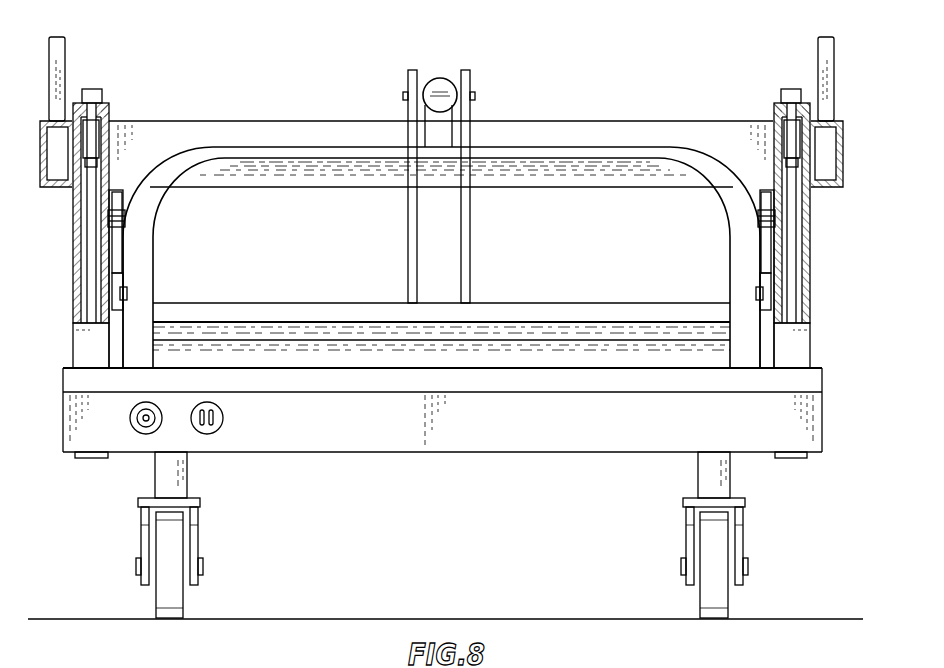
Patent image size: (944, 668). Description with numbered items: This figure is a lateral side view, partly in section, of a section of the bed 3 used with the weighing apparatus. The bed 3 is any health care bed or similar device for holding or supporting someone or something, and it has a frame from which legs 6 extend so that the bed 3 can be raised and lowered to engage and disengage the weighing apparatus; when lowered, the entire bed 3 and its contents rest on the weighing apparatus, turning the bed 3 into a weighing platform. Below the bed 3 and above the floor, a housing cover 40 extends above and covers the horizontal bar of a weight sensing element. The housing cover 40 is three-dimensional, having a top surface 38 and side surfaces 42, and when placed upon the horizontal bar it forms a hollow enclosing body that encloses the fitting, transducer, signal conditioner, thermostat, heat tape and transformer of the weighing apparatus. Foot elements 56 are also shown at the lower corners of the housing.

The bed 3 is at (311, 313).
The top surface 38 is at (530, 368).
The housing cover 40 is at (393, 452).
The side surfaces 42 is at (508, 427).
The legs 6 is at (187, 477).
The foot pad 56 is at (90, 458).